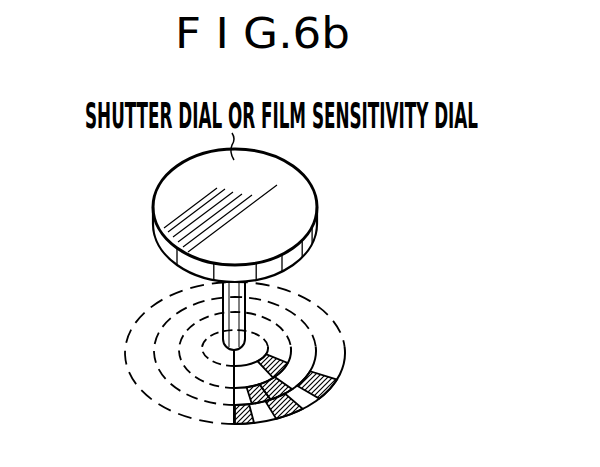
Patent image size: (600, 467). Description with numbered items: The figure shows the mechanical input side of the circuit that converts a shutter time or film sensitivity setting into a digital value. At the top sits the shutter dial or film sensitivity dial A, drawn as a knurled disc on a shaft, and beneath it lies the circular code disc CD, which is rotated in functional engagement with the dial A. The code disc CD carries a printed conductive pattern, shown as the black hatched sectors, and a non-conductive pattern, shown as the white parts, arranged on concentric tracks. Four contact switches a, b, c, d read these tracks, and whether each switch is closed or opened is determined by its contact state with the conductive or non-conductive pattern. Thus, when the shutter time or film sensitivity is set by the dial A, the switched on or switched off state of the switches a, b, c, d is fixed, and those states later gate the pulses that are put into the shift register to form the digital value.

The shutter dial or film sensitivity dial A is at (315, 221).
The circular code disc CD is at (259, 363).
The contact switch a is at (227, 358).
The contact switch b is at (225, 375).
The contact switch c is at (226, 395).
The contact switch d is at (226, 418).